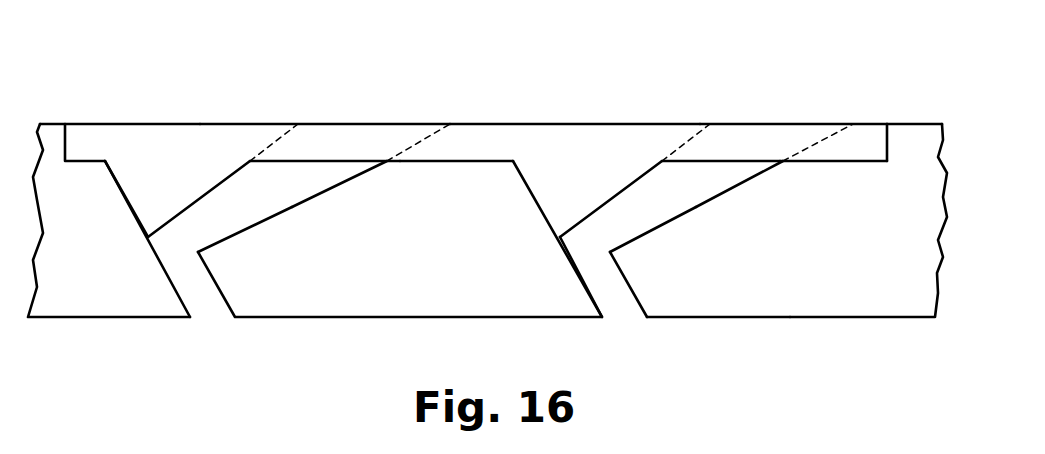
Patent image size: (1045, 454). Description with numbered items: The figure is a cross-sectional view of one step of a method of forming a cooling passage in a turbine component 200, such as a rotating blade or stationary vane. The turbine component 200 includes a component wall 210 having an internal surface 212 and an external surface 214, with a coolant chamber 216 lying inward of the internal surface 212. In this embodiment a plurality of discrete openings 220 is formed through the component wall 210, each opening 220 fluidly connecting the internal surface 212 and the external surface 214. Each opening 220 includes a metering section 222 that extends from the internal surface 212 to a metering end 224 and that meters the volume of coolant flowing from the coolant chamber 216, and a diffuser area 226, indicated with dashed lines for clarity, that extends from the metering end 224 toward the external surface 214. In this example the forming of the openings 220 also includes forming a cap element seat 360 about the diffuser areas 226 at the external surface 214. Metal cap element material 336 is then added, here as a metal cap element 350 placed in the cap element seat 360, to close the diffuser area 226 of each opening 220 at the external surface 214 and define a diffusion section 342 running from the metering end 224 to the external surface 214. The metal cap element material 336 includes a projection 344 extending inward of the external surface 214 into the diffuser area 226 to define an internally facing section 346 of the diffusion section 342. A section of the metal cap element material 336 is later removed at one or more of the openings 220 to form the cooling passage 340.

The turbine component 200 is at (68, 112).
The component wall 210 is at (923, 240).
The internal surface 212 is at (900, 318).
The external surface 214 is at (910, 123).
The coolant chamber 216 is at (452, 365).
The opening 220 is at (277, 182).
The metering section 222 is at (207, 300).
The metering end 224 is at (178, 248).
The diffuser area 226 is at (323, 177).
The metal cap element material 336 is at (200, 123).
The cooling passage 340 is at (245, 232).
The diffusion section 342 is at (300, 183).
The projection 344 is at (167, 185).
The internally facing section 346 is at (237, 172).
The metal cap element 350 is at (562, 137).
The cap element seat 360 is at (83, 163).